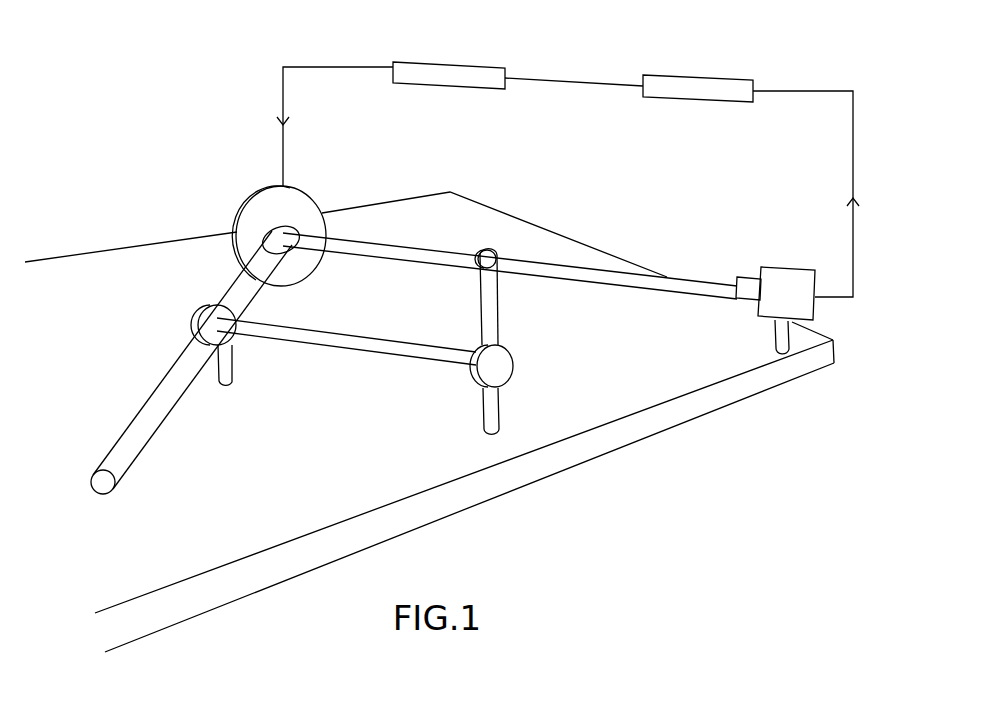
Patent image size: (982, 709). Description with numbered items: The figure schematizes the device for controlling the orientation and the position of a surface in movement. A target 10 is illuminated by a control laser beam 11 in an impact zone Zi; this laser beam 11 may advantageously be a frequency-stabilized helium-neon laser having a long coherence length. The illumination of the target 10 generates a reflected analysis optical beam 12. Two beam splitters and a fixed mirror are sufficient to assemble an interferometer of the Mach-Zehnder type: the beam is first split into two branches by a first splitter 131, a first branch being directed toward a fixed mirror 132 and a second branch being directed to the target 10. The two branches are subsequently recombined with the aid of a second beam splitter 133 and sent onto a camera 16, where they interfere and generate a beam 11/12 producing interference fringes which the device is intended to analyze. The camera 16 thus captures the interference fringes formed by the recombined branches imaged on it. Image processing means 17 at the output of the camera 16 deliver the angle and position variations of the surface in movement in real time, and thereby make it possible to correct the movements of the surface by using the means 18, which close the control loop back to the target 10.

The target 10 is at (230, 230).
The control laser beam 11 is at (127, 448).
The reflected analysis optical beam 12 is at (398, 253).
The camera 16 is at (737, 283).
The image processing means 17 is at (738, 77).
The correction means 18 is at (487, 66).
The first splitter 131 is at (198, 330).
The fixed mirror 132 is at (497, 364).
The second beam splitter 133 is at (485, 252).
The impact zone Zi is at (283, 228).